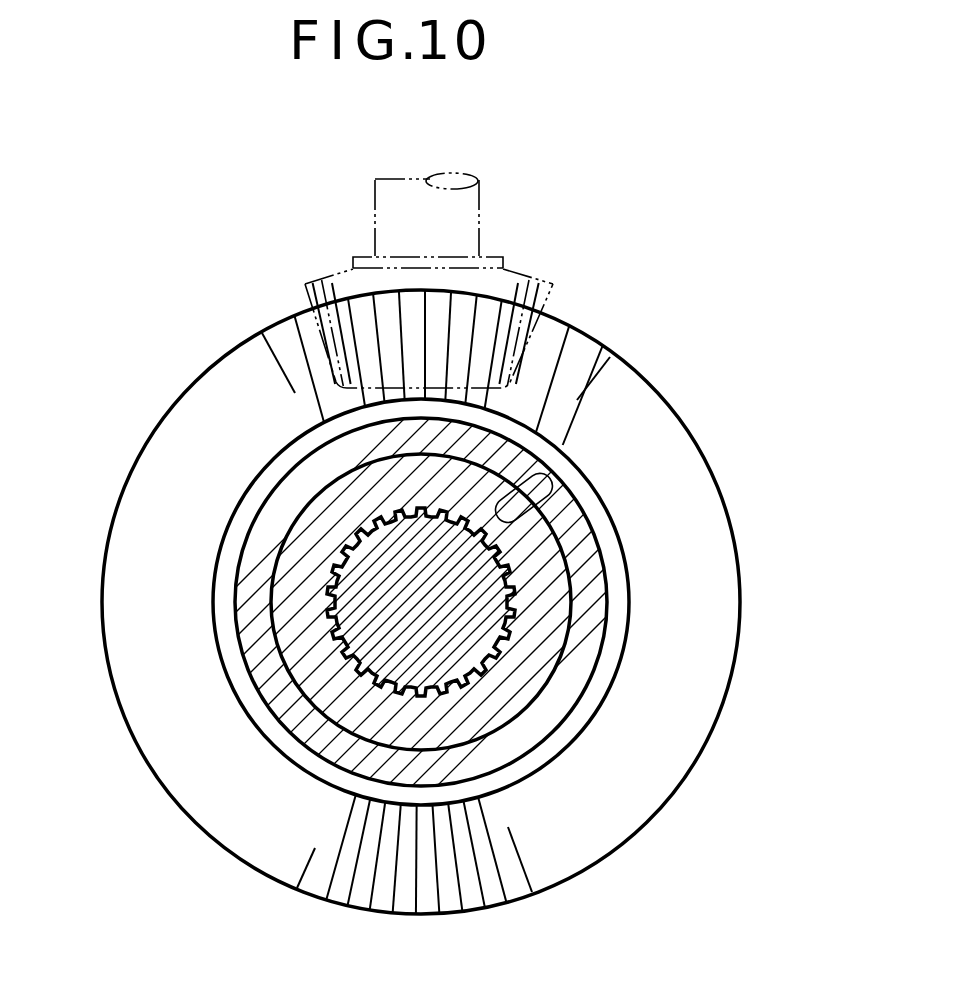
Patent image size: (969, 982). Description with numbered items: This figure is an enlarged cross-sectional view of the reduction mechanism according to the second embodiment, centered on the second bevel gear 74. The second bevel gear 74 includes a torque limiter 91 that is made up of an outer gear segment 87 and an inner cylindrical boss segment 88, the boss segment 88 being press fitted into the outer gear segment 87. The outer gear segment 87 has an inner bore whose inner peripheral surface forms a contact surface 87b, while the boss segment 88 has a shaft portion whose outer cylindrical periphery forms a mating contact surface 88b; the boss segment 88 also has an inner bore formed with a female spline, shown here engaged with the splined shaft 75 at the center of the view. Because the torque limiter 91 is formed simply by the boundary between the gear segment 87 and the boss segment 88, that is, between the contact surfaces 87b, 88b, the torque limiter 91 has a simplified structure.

The second bevel gear 74 is at (224, 252).
The outer gear segment 87 is at (253, 522).
The inner cylindrical boss segment 88 is at (322, 516).
The torque limiter 91 is at (872, 278).
The contact surface 87b is at (545, 500).
The contact surface 88b is at (590, 533).
The splined shaft 75 is at (392, 640).